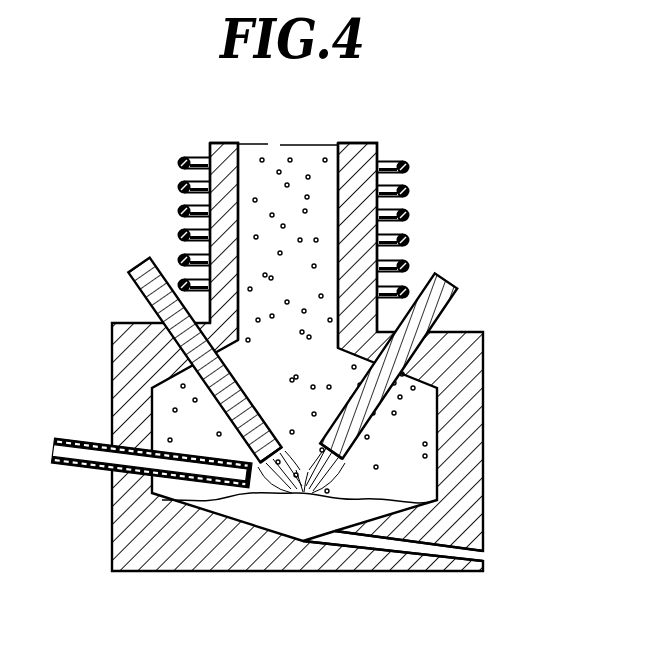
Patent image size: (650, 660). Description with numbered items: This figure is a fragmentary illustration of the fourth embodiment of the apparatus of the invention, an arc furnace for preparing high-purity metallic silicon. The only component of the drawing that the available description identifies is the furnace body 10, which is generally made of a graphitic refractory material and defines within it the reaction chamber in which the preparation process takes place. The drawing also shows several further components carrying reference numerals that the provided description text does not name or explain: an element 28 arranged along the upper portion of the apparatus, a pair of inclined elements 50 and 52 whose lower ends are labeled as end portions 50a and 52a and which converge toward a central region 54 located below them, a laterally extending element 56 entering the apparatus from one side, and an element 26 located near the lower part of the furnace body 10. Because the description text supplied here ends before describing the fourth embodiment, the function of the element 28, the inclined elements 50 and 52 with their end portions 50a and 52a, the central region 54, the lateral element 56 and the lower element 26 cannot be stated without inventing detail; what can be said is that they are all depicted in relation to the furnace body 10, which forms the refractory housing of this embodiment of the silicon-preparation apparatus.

The furnace body 10 is at (360, 158).
The induction heating coil 28 is at (409, 191).
The first atomizing gas nozzle 50 is at (140, 272).
The second atomizing gas nozzle 52 is at (447, 282).
The first nozzle tip 50a is at (281, 440).
The second nozzle tip 52a is at (343, 464).
The atomization zone 54 is at (304, 488).
The gas supply tube 56 is at (70, 436).
The outlet passage 26 is at (465, 554).